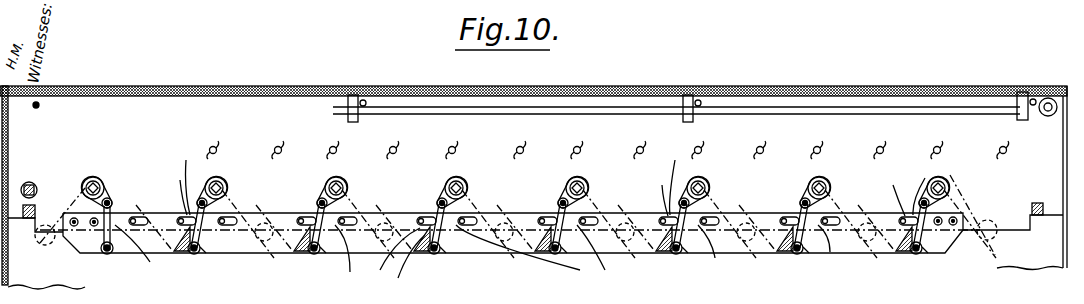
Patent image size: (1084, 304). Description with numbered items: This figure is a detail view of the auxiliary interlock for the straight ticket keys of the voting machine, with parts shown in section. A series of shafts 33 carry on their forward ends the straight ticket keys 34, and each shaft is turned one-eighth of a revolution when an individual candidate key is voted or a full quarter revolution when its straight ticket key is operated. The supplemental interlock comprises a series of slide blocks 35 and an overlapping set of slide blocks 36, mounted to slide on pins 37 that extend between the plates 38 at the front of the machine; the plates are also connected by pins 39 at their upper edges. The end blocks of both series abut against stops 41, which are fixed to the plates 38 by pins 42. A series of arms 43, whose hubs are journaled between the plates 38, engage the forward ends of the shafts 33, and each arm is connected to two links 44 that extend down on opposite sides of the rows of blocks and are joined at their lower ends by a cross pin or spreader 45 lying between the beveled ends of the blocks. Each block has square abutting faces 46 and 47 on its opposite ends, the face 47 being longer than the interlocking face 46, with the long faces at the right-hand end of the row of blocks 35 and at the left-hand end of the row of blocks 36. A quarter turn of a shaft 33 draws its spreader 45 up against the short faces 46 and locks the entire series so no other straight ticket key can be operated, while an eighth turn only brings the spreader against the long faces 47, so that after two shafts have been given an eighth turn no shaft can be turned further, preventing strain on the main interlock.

The shaft 33 is at (95, 178).
The straight ticket key 34 is at (250, 245).
The slide block 35 is at (185, 254).
The slide block 36 is at (268, 243).
The pin 37 is at (172, 217).
The plate 38 is at (1031, 195).
The pin 39 is at (37, 108).
The stop 41 is at (72, 243).
The pin 42 is at (92, 217).
The arm 43 is at (112, 199).
The link 44 is at (110, 255).
The spreader 45 is at (104, 254).
The interlocking face 46 is at (544, 216).
The interlocking face 47 is at (482, 257).